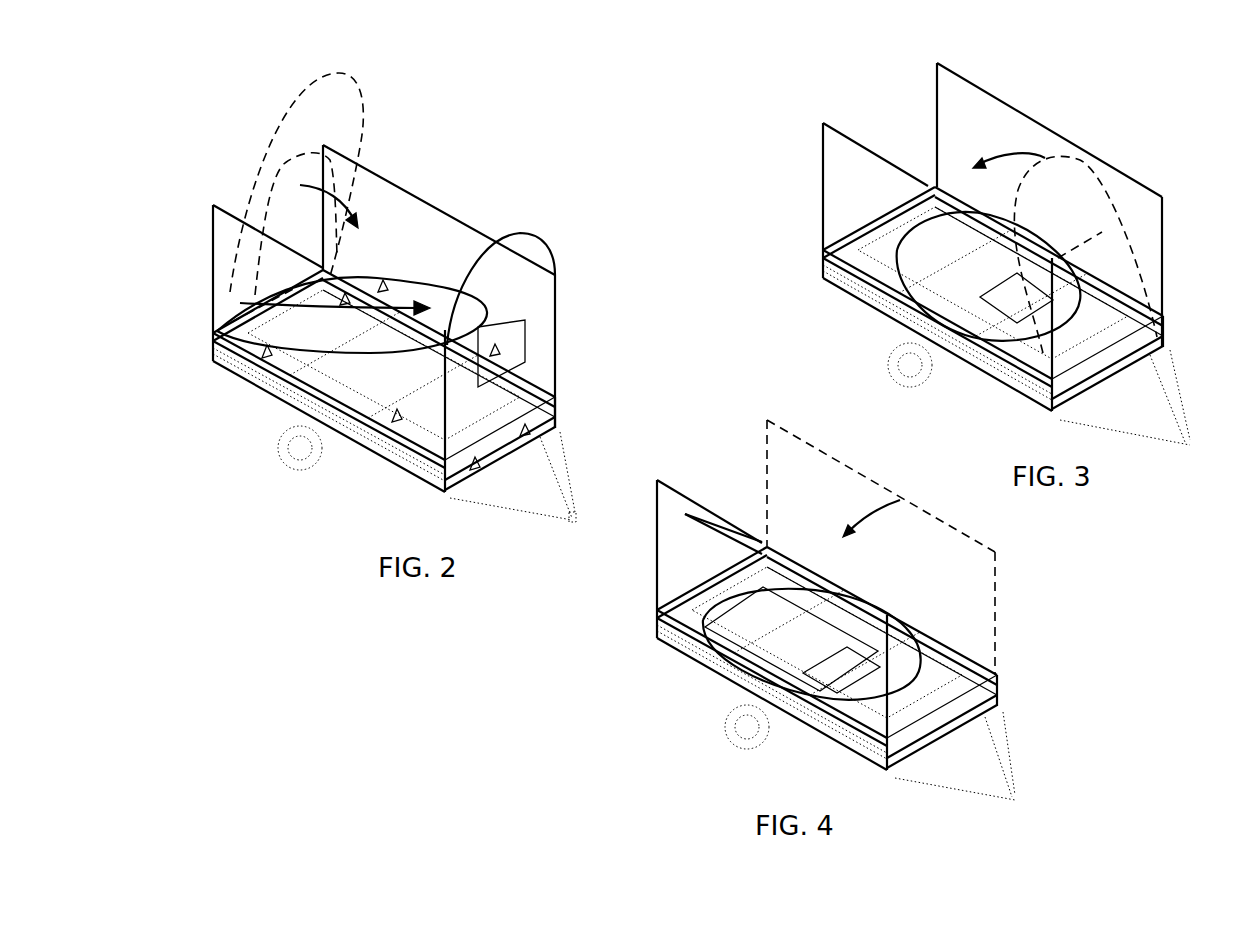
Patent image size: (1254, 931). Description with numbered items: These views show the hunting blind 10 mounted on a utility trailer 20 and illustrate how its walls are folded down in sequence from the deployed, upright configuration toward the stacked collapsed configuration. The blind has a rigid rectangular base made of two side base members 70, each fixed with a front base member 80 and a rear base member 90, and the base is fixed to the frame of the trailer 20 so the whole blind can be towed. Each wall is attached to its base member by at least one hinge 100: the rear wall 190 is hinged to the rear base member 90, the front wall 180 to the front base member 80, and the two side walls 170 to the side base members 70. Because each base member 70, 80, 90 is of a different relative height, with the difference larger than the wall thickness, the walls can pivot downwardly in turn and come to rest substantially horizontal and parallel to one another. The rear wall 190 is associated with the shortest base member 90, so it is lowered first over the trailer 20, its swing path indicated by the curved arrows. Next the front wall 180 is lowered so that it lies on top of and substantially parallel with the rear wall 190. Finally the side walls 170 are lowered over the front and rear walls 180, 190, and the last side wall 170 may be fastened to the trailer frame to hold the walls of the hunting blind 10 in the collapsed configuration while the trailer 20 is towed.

In FIG. 2, the hunting blind 10 is at (539, 126).
In FIG. 3, the hunting blind 10 is at (1142, 92).
In FIG. 4, the hunting blind 10 is at (781, 393).
In FIG. 2, the utility trailer 20 is at (584, 474).
In FIG. 2, the side base member 70 is at (270, 384).
In FIG. 3, the side base member 70 is at (882, 308).
In FIG. 2, the front base member 80 is at (552, 430).
In FIG. 3, the front base member 80 is at (1102, 387).
In FIG. 2, the rear base member 90 is at (228, 313).
In FIG. 2, the hinge 100 is at (233, 310).
In FIG. 2, the side wall 170 is at (212, 251).
In FIG. 3, the side wall 170 is at (1000, 100).
In FIG. 4, the side wall 170 is at (677, 490).
In FIG. 2, the front wall 180 is at (555, 254).
In FIG. 3, the front wall 180 is at (1128, 258).
In FIG. 4, the front wall 180 is at (962, 673).
In FIG. 2, the rear wall 190 is at (277, 127).
In FIG. 3, the rear wall 190 is at (910, 227).
In FIG. 4, the rear wall 190 is at (668, 650).